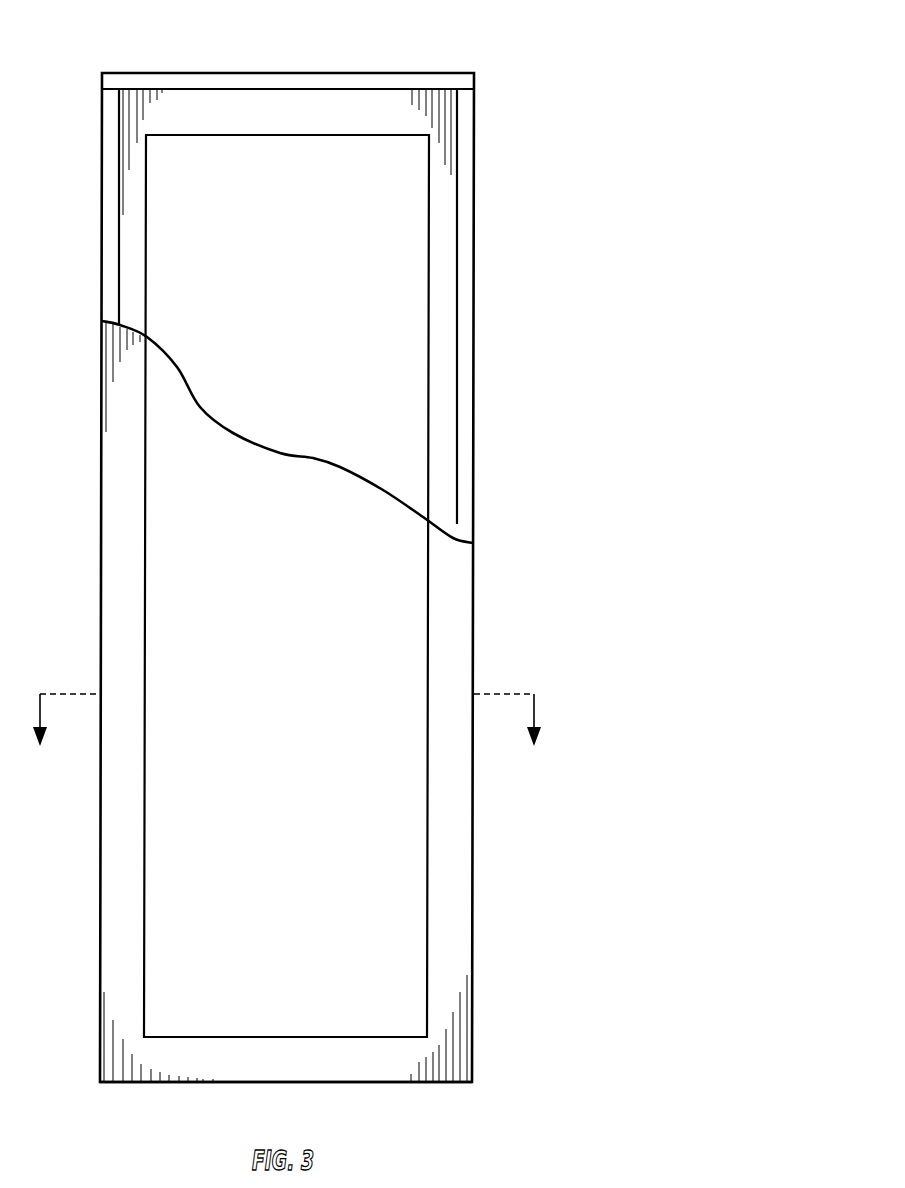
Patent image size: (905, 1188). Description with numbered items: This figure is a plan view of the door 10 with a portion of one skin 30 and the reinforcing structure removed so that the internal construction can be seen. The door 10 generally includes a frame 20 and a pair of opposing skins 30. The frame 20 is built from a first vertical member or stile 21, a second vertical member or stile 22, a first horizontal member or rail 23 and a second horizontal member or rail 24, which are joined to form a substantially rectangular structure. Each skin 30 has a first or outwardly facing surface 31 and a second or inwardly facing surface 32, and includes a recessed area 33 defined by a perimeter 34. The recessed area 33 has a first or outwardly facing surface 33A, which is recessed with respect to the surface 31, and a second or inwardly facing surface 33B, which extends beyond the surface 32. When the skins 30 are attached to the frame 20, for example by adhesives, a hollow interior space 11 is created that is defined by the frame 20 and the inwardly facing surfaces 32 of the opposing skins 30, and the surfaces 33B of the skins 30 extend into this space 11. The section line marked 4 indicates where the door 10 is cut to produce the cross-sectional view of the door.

The display assembly 10 is at (533, 479).
The boundary between display portions 11 is at (387, 396).
The frame 20 is at (491, 51).
The right side frame member 21 is at (467, 270).
The left side frame member 22 is at (110, 262).
The top frame member 23 is at (278, 89).
The bottom frame member 24 is at (285, 1083).
The bezel region 30 is at (449, 871).
The bezel surface 31 is at (448, 947).
The upper corner region 32 is at (445, 128).
The display panel 33 is at (191, 839).
The lower display portion 33A is at (306, 830).
The upper display portion 33B is at (307, 302).
The corner portion 34 is at (157, 137).
The section line 4- 4 is at (288, 735).